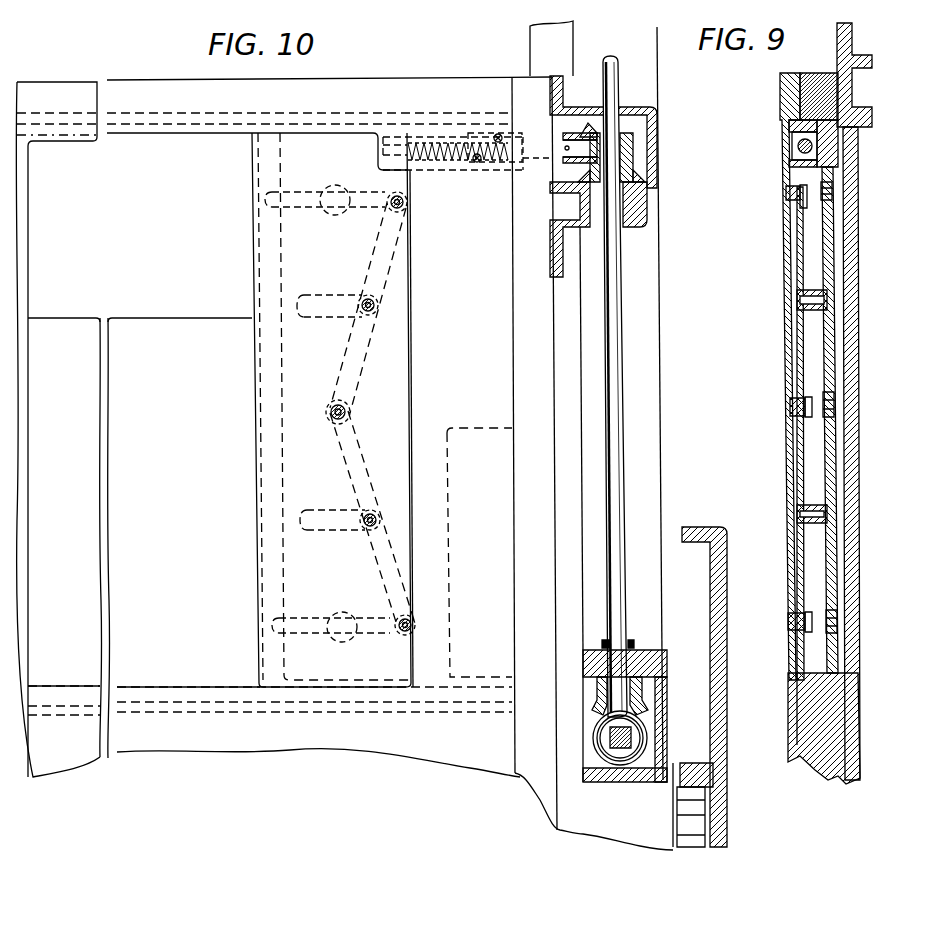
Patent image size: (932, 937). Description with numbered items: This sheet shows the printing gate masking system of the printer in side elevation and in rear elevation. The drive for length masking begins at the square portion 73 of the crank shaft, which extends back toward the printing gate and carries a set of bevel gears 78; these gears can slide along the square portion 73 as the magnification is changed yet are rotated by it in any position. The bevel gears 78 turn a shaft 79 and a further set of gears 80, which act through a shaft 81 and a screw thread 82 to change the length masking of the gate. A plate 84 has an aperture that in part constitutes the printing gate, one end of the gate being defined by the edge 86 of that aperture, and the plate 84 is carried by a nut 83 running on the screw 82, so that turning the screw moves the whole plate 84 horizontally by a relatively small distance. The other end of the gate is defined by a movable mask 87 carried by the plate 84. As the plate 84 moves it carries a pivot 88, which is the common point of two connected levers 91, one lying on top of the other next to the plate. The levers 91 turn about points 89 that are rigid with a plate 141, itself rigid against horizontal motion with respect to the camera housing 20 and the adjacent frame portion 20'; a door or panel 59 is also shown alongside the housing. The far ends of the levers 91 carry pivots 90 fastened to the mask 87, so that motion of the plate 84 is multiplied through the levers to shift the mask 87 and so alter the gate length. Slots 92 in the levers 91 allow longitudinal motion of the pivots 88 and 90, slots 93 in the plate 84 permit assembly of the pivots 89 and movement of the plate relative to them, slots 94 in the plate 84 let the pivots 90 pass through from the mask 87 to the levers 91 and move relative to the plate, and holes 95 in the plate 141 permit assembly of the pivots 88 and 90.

In FIG. 10, the camera housing 20 is at (666, 79).
In FIG. 9, the camera housing 20 is at (864, 74).
In FIG. 10, the door frame bracket 20' is at (700, 663).
In FIG. 10, the door panel 59 is at (127, 265).
In FIG. 9, the door panel 59 is at (847, 304).
In FIG. 10, the square portion of the shaft 73 is at (635, 735).
In FIG. 10, the bevel gears 78 is at (600, 735).
In FIG. 10, the shaft 79 is at (634, 369).
In FIG. 10, the gears 80 is at (647, 134).
In FIG. 10, the shaft 81 is at (526, 165).
In FIG. 10, the screw thread 82 is at (425, 140).
In FIG. 9, the screw thread 82 is at (798, 146).
In FIG. 10, the nut 83 is at (480, 135).
In FIG. 9, the nut 83 is at (811, 157).
In FIG. 10, the plate 84 is at (340, 97).
In FIG. 9, the plate 84 is at (790, 86).
In FIG. 10, the edge of the aperture 86 is at (30, 371).
In FIG. 10, the movable mask 87 is at (268, 250).
In FIG. 9, the movable mask 87 is at (786, 252).
In FIG. 10, the pivot 88 is at (330, 412).
In FIG. 9, the pivot 88 is at (790, 406).
In FIG. 10, the pivot points 89 is at (366, 530).
In FIG. 9, the pivot points 89 is at (828, 294).
In FIG. 10, the pivots 90 is at (410, 203).
In FIG. 9, the pivots 90 is at (788, 191).
In FIG. 10, the levers 91 is at (360, 371).
In FIG. 9, the levers 91 is at (804, 246).
In FIG. 10, the slots 92 is at (404, 232).
In FIG. 9, the slots 92 is at (796, 206).
In FIG. 10, the slots 93 is at (312, 319).
In FIG. 9, the slots 93 is at (797, 301).
In FIG. 10, the slots 94 is at (262, 193).
In FIG. 10, the holes 95 is at (335, 212).
In FIG. 9, the holes 95 is at (829, 194).
In FIG. 9, the plate 141 is at (807, 108).